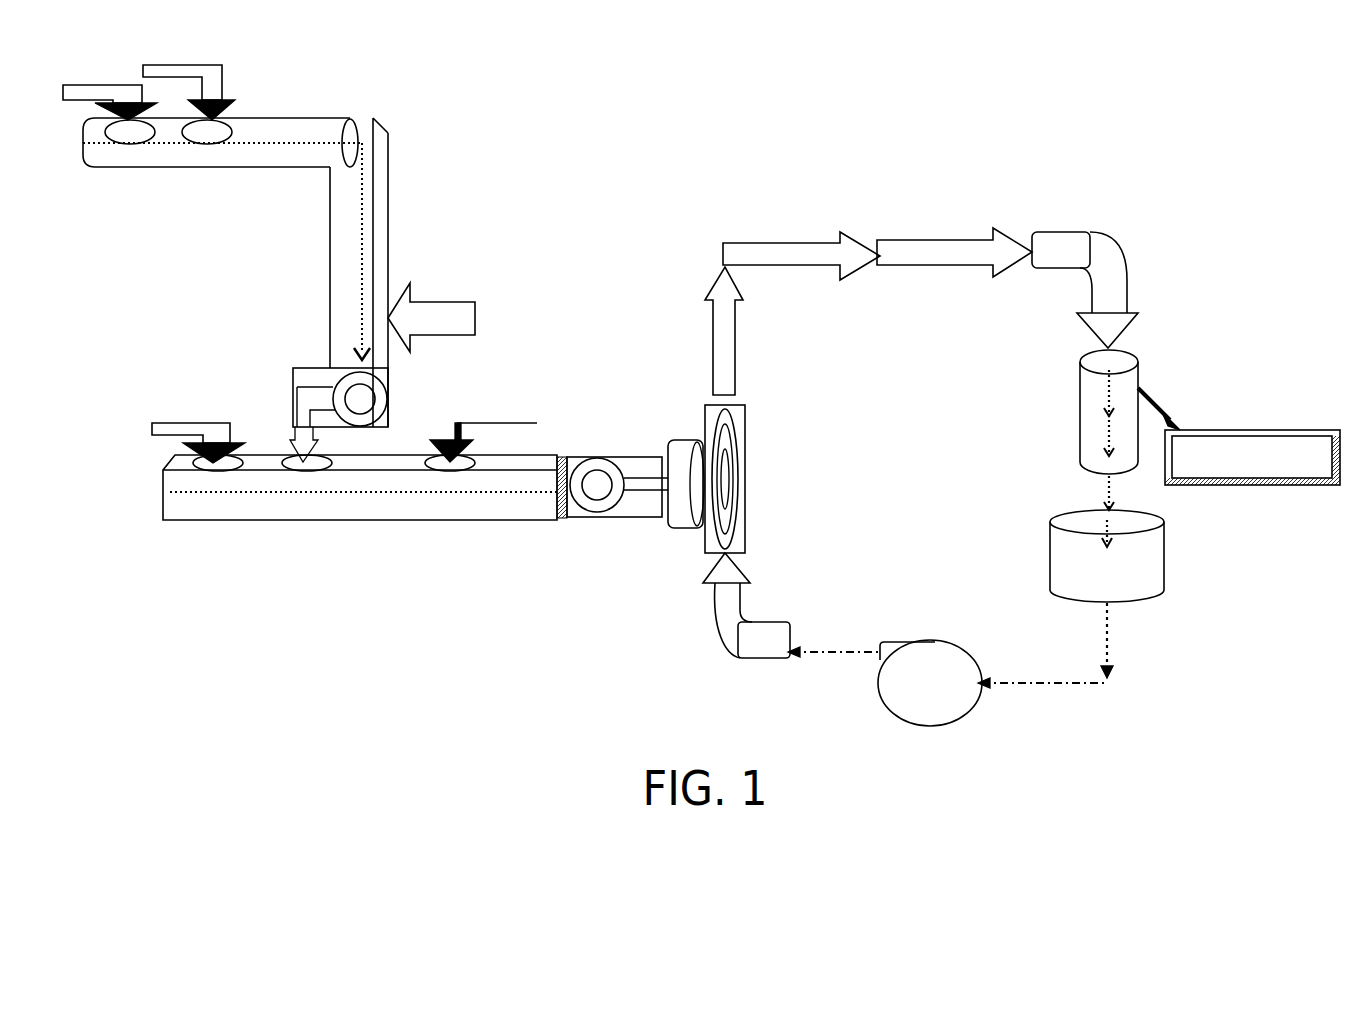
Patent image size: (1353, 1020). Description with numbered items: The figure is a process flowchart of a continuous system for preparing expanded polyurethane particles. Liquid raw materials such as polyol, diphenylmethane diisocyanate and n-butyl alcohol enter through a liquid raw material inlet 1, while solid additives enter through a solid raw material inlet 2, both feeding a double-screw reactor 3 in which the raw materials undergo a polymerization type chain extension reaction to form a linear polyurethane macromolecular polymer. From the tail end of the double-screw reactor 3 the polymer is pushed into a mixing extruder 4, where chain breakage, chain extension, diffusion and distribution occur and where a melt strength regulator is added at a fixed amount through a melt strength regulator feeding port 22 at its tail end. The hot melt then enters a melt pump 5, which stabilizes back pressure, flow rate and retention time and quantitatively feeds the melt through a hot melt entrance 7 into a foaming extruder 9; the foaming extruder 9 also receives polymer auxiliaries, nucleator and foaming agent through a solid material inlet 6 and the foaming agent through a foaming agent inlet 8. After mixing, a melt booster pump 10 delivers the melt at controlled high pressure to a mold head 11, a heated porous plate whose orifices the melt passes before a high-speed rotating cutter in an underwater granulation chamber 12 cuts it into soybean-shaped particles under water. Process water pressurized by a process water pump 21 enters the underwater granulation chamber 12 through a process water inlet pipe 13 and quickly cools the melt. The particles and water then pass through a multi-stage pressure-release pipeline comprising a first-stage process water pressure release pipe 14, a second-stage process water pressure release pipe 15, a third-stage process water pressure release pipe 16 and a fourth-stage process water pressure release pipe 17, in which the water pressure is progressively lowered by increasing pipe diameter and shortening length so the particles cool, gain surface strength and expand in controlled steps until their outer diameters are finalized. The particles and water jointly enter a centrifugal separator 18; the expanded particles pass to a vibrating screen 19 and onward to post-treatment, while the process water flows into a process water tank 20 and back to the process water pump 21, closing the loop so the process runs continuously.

The liquid raw material inlet 1 is at (212, 126).
The solid raw material inlet 2 is at (206, 104).
The double-screw reactor 3 is at (319, 127).
The mixing extruder 4 is at (355, 272).
The melt pump 5 is at (362, 415).
The solid material inlet 6 is at (198, 454).
The hot melt entrance 7 is at (307, 463).
The foaming agent inlet 8 is at (481, 454).
The foaming extruder 9 is at (365, 490).
The melt booster pump 10 is at (617, 487).
The mold head 11 is at (687, 484).
The underwater granulation chamber 12 is at (751, 479).
The process water inlet pipe 13 is at (747, 610).
The first-stage process water pressure release pipe 14 is at (726, 331).
The second-stage process water pressure release pipe 15 is at (801, 256).
The third-stage process water pressure release pipe 16 is at (954, 253).
The fourth-stage process water pressure release pipe 17 is at (1085, 290).
The centrifugal separator 18 is at (1130, 412).
The vibrating screen 19 is at (1252, 457).
The process water tank 20 is at (1116, 539).
The process water pump 21 is at (950, 664).
The melt strength regulator feeding port 22 is at (431, 317).